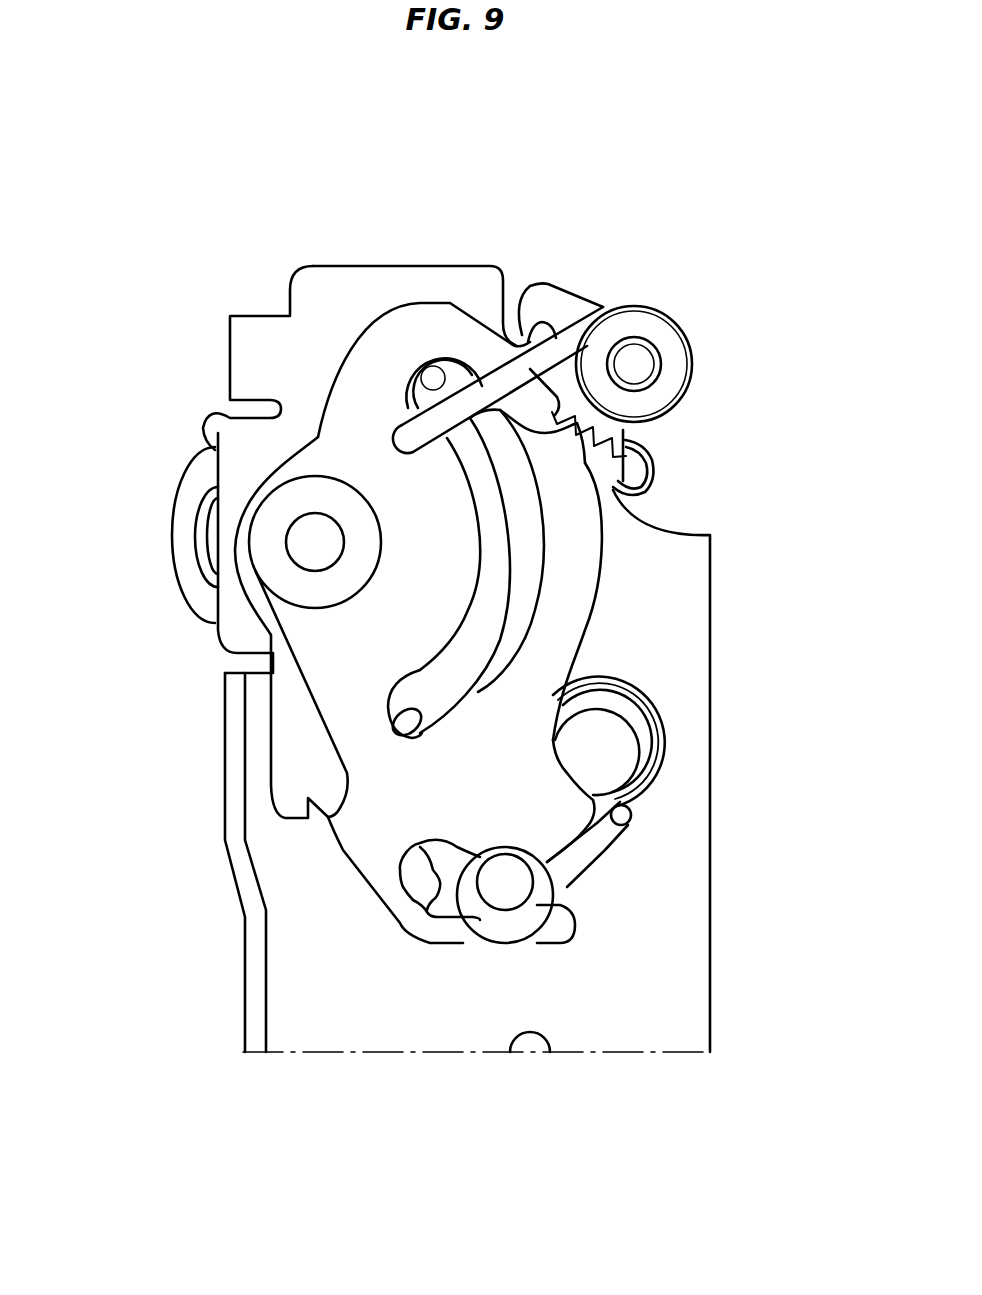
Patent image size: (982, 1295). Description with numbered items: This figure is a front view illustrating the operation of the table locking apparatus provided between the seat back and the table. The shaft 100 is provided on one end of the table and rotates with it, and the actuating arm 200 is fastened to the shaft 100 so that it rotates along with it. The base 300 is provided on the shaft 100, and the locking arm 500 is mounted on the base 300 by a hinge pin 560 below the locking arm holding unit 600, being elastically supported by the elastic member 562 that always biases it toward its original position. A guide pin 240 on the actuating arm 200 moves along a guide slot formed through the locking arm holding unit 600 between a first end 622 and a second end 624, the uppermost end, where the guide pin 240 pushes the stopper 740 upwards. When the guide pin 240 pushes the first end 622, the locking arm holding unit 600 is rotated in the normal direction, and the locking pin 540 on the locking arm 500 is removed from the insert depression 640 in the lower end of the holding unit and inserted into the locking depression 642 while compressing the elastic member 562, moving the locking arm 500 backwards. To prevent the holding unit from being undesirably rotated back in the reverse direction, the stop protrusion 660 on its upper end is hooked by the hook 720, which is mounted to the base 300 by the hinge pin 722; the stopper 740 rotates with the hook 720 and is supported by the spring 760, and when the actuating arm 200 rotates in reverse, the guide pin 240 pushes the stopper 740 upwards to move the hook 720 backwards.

The shaft 100 is at (270, 555).
The actuating arm 200 is at (290, 717).
The guide pin 240 is at (417, 703).
The base 300 is at (277, 1010).
The locking arm 500 is at (590, 840).
The locking pin 540 is at (525, 882).
The hinge pin 560 is at (607, 757).
The elastic member 562 is at (660, 717).
The locking arm holding unit 600 is at (363, 455).
The first end of the guide slot 622 is at (420, 733).
The second end of the guide slot 624 is at (427, 390).
The insert depression 640 is at (423, 918).
The locking depression 642 is at (410, 853).
The stop protrusion 660 is at (533, 355).
The hook 720 is at (548, 297).
The hinge pin 722 is at (637, 360).
The stopper 740 is at (562, 350).
The spring 760 is at (647, 453).